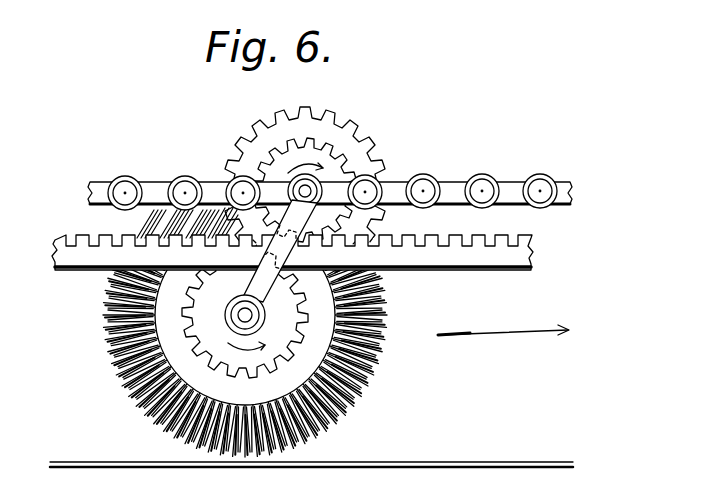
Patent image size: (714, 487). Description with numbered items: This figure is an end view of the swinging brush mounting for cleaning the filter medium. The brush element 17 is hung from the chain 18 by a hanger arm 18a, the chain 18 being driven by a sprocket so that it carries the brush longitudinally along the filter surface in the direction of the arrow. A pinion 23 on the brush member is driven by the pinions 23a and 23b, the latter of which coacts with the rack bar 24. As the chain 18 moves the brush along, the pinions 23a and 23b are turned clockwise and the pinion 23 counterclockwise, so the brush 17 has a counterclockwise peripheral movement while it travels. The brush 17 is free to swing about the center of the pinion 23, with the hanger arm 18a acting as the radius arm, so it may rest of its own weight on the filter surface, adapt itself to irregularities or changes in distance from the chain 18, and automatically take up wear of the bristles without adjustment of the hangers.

The brush element 17 is at (113, 361).
The chain 18 is at (152, 186).
The hanger arm 18a is at (398, 231).
The pinion 23 is at (183, 313).
The pinion 23a is at (362, 155).
The pinion 23b is at (356, 171).
The rack bar 24 is at (498, 260).